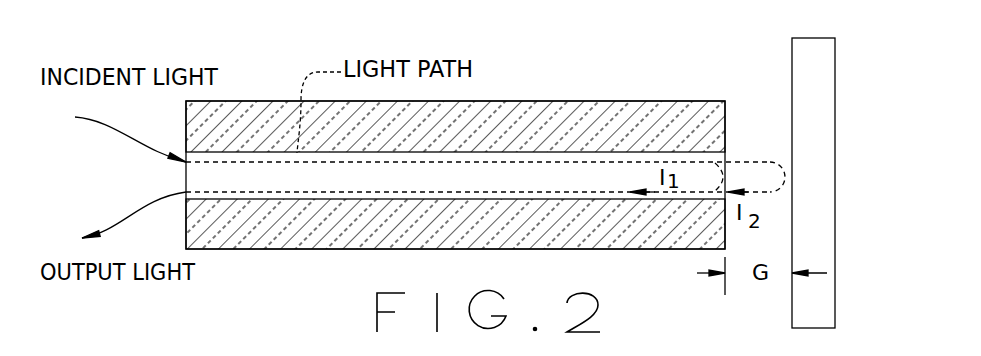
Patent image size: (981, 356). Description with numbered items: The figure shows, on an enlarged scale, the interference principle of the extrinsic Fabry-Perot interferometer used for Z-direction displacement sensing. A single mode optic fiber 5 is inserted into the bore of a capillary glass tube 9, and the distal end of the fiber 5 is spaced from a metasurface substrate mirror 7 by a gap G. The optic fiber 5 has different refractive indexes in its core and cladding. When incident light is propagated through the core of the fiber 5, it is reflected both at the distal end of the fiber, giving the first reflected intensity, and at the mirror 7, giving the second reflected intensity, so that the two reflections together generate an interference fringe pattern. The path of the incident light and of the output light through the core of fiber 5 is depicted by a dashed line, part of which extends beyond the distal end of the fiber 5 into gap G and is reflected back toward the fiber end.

The single mode optic fiber 5 is at (561, 249).
The capillary glass tube 9 is at (573, 101).
The mirror 7 is at (792, 60).